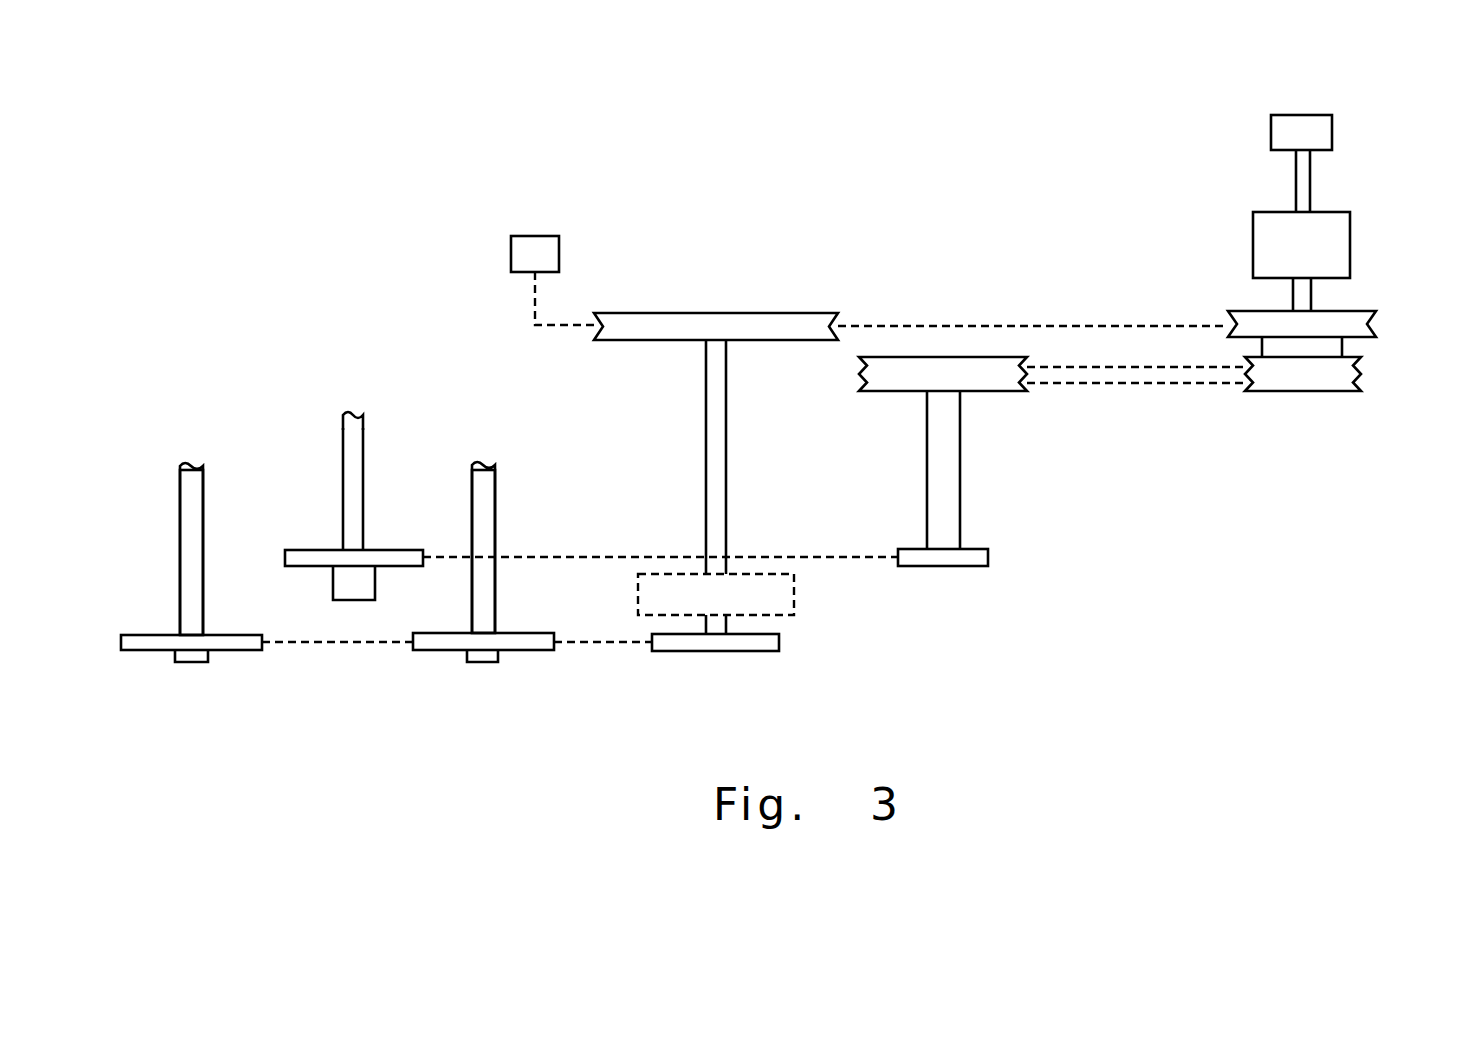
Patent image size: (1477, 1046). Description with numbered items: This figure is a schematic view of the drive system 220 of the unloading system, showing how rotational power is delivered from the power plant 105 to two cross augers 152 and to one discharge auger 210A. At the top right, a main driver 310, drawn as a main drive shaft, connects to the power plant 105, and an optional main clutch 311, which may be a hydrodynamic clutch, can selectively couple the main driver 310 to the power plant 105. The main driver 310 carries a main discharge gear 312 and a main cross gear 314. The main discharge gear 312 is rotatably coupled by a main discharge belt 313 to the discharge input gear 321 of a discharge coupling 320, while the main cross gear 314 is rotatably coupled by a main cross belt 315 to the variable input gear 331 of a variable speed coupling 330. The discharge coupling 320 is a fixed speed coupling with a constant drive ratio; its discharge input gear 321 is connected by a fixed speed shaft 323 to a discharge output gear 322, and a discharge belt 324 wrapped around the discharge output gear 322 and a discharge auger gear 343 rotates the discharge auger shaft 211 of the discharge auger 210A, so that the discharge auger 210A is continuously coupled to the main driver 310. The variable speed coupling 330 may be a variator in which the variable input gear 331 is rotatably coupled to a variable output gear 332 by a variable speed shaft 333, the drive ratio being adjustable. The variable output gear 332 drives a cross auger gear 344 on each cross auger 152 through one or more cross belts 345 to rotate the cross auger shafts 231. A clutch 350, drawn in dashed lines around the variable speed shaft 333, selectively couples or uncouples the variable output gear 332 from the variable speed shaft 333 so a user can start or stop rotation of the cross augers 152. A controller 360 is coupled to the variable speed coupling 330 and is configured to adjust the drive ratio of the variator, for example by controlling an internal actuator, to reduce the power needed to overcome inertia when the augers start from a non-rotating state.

The power plant 105 is at (1345, 120).
The cross augers 152 is at (335, 498).
The discharge auger 210A is at (346, 371).
The discharge auger shaft 211 is at (309, 489).
The drive system 220 is at (1116, 139).
The shaft 231 is at (335, 552).
The main driver 310 is at (1361, 293).
The main clutch 311 is at (1344, 214).
The main discharge gear 312 is at (1312, 401).
The main discharge belt 313 is at (1136, 408).
The main cross gear 314 is at (1345, 338).
The main cross belt 315 is at (1033, 291).
The discharge coupling 320 is at (961, 494).
The discharge input gear 321 is at (968, 401).
The discharge output gear 322 is at (961, 590).
The fixed speed shaft 323 is at (902, 470).
The discharge belt 324 is at (660, 521).
The variable speed coupling 330 is at (716, 450).
The variable input gear 331 is at (716, 292).
The variable output gear 332 is at (733, 669).
The variable speed shaft 333 is at (755, 487).
The discharge auger gear 343 is at (363, 542).
The cross auger gear 344 is at (353, 681).
The cross belts 345 is at (457, 676).
The clutch 350 is at (768, 606).
The controller 360 is at (506, 272).